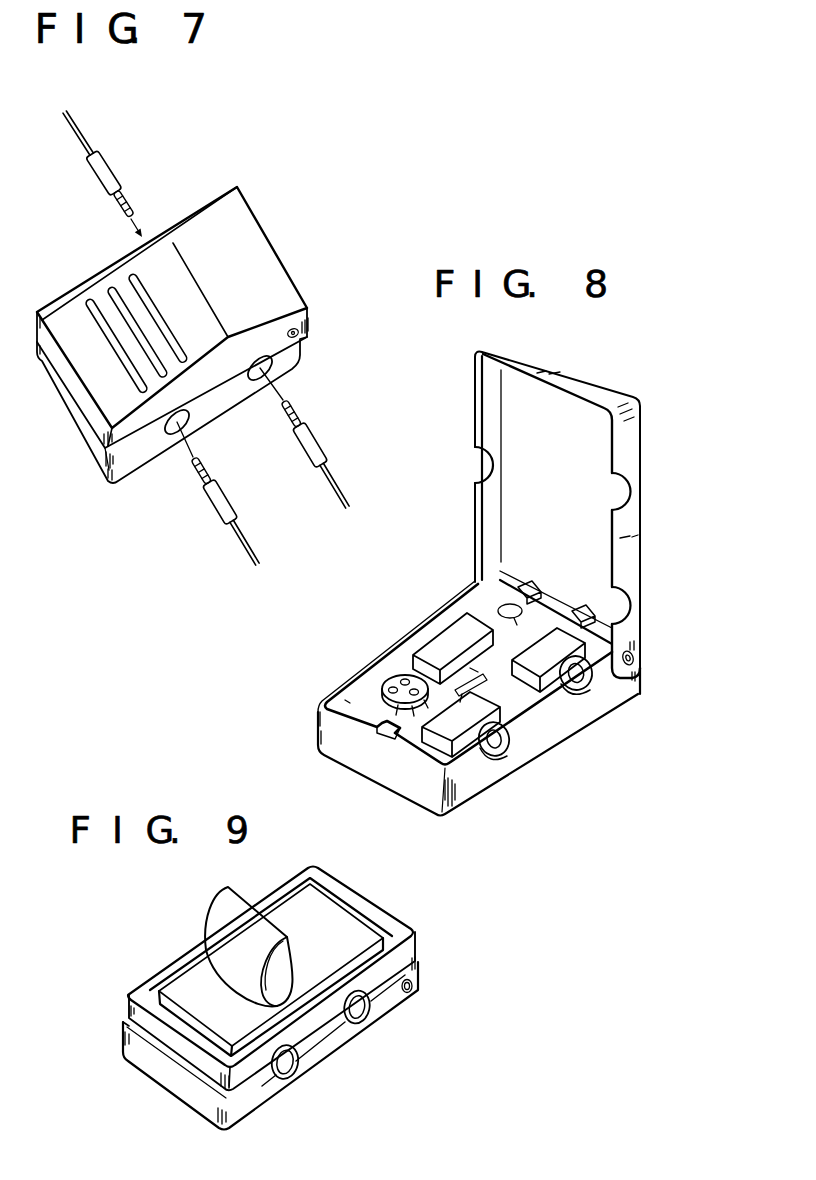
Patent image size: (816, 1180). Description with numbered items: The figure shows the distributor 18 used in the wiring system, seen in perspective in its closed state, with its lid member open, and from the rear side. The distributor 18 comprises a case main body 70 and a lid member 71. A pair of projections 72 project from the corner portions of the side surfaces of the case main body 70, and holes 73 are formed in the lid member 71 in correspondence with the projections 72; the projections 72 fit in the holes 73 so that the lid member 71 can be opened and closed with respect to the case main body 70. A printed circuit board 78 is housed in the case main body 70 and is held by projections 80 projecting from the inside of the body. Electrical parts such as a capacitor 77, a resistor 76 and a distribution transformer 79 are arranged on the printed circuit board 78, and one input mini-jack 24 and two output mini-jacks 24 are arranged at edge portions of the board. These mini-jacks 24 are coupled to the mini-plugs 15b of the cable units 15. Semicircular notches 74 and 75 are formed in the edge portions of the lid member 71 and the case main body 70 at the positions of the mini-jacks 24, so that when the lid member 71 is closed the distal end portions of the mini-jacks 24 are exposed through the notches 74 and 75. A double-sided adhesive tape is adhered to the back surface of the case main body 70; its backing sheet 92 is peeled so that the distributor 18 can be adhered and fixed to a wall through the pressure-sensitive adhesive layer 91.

In FIG. 7, the cable unit 15 is at (77, 124).
In FIG. 7, the mini-plug 15b is at (103, 168).
In FIG. 7, the distributor 18 is at (286, 203).
In FIG. 8, the distributor 18 is at (672, 592).
In FIG. 9, the distributor 18 is at (396, 899).
In FIG. 7, the mini-jack 24 is at (146, 238).
In FIG. 8, the mini-jack 24 is at (425, 648).
In FIG. 9, the mini-jack 24 is at (364, 1016).
In FIG. 7, the case main body 70 is at (306, 346).
In FIG. 8, the case main body 70 is at (592, 704).
In FIG. 9, the case main body 70 is at (413, 947).
In FIG. 7, the lid member 71 is at (278, 268).
In FIG. 8, the lid member 71 is at (641, 433).
In FIG. 9, the lid member 71 is at (327, 1052).
In FIG. 7, the projection 72 is at (301, 333).
In FIG. 8, the projection 72 is at (635, 658).
In FIG. 9, the projection 72 is at (412, 991).
In FIG. 7, the hole 73 is at (311, 322).
In FIG. 8, the hole 73 is at (636, 648).
In FIG. 8, the semicircular notch 74 is at (631, 494).
In FIG. 8, the semicircular notch 75 is at (598, 680).
In FIG. 8, the resistor 76 is at (488, 678).
In FIG. 8, the capacitor 77 is at (500, 606).
In FIG. 8, the printed circuit board 78 is at (345, 697).
In FIG. 8, the distribution transformer 79 is at (395, 682).
In FIG. 8, the projection 80 is at (526, 584).
In FIG. 9, the pressure-sensitive adhesive layer 91 is at (178, 988).
In FIG. 9, the backing sheet 92 is at (215, 915).